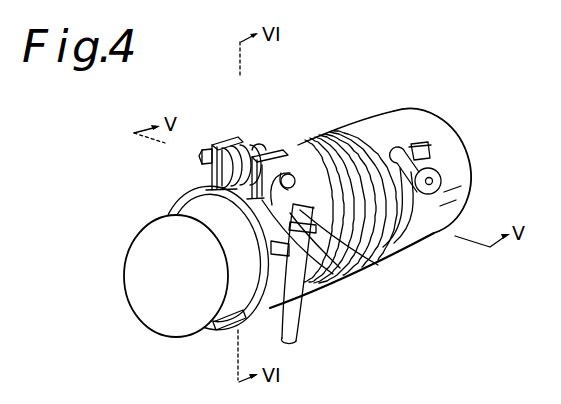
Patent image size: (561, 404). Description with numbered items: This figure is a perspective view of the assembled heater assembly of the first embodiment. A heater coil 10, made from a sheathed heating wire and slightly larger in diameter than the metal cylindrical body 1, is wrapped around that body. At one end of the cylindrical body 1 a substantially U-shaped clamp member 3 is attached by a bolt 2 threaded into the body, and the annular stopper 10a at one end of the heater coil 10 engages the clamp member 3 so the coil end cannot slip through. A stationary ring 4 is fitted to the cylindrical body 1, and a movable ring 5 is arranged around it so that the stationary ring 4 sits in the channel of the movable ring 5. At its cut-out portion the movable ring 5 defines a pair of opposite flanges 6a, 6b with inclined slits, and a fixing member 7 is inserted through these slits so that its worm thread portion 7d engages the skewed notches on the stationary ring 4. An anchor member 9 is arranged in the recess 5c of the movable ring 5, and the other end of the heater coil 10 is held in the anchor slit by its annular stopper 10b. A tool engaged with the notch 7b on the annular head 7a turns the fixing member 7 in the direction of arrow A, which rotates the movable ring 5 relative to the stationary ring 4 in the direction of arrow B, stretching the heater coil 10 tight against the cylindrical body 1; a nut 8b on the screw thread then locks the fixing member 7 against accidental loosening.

The cylindrical body 1 is at (153, 318).
The bolt 2 is at (442, 180).
The clamp member 3 is at (434, 214).
The stationary ring 4 is at (200, 190).
The movable ring 5 is at (240, 322).
The inner recess 5c is at (262, 303).
The flange 6a is at (221, 145).
The flange 6b is at (280, 158).
The fixing member 7 is at (249, 136).
The annular head 7a is at (295, 176).
The notch 7b is at (372, 258).
The worm thread portion 7d is at (256, 150).
The nut 8b is at (206, 150).
The anchor member 9 is at (340, 273).
The heater coil 10 is at (298, 322).
The annular stopper 10a is at (428, 147).
The annular stopper 10b is at (315, 282).
The arrow A is at (258, 195).
The arrow B is at (264, 216).